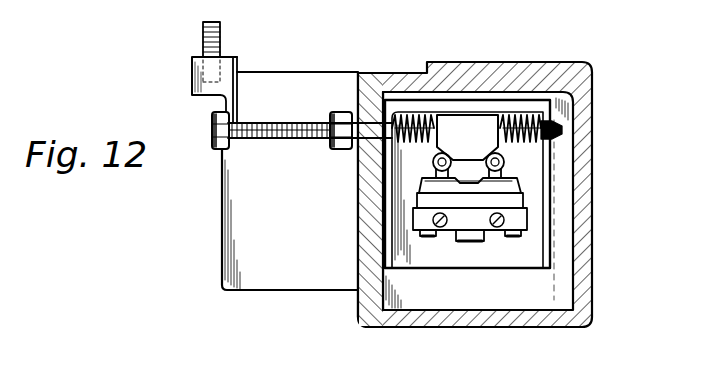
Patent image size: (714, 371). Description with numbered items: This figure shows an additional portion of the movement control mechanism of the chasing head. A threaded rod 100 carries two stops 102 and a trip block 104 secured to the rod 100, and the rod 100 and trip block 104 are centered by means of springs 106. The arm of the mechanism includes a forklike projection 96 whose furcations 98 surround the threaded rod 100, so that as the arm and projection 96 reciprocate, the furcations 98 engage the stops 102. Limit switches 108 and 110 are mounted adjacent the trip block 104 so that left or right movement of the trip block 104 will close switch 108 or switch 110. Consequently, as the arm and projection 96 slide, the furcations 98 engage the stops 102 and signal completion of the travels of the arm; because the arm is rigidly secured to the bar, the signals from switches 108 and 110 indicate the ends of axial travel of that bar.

The forklike projection 96 is at (239, 72).
The furcations 98 is at (239, 104).
The threaded rod 100 is at (278, 148).
The stops 102 is at (217, 151).
The trip block 104 is at (483, 141).
The springs 106 is at (408, 118).
The limit switch 108 is at (504, 161).
The limit switch 110 is at (434, 166).